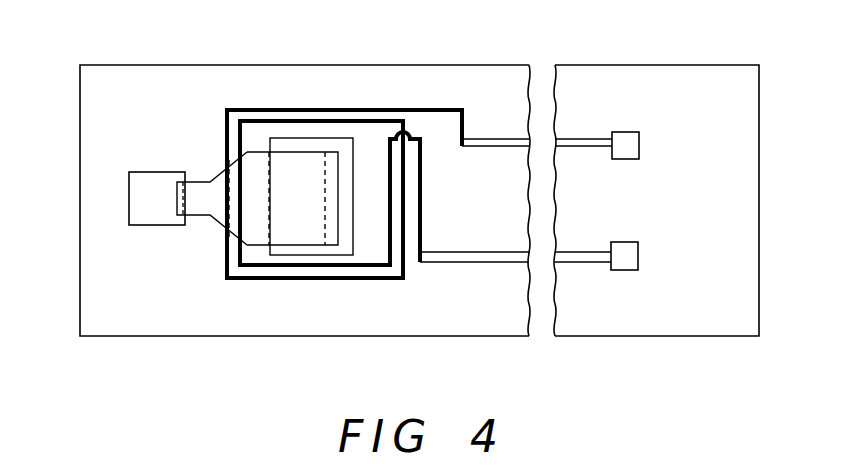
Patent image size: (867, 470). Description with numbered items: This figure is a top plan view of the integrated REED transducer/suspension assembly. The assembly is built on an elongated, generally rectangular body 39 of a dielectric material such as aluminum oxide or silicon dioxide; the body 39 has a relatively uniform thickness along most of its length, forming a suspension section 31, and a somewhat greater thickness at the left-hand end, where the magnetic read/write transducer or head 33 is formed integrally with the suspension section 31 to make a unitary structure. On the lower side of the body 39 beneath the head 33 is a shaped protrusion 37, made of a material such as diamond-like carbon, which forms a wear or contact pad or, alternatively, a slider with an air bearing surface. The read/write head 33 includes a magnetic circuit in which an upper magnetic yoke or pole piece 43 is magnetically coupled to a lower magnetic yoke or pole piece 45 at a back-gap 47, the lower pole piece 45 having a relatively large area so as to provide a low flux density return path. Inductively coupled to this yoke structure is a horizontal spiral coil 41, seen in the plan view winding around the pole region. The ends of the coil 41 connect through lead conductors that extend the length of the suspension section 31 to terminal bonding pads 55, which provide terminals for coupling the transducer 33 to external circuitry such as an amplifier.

The suspension section 31 is at (475, 325).
The magnetic read/write transducer or head 33 is at (225, 293).
The shaped protrusion 37 is at (137, 192).
The elongated generally rectangular body 39 is at (503, 80).
The horizontal spiral coil 41 is at (394, 110).
The upper magnetic yoke or pole piece 43 is at (257, 158).
The lower magnetic yoke or pole piece 45 is at (300, 143).
The back-gap 47 is at (330, 158).
The terminal bonding pads 55 is at (640, 145).